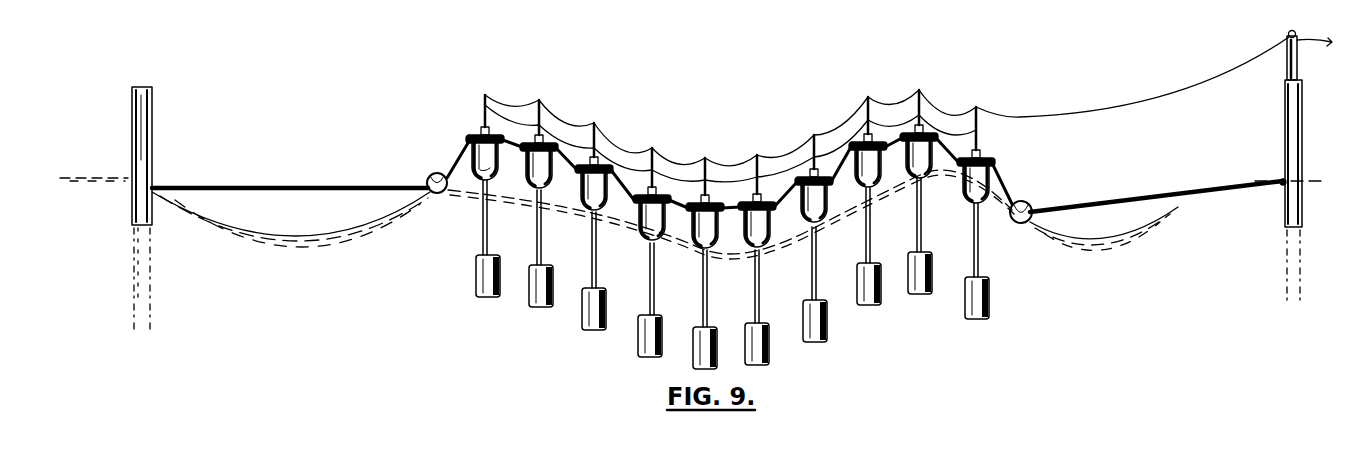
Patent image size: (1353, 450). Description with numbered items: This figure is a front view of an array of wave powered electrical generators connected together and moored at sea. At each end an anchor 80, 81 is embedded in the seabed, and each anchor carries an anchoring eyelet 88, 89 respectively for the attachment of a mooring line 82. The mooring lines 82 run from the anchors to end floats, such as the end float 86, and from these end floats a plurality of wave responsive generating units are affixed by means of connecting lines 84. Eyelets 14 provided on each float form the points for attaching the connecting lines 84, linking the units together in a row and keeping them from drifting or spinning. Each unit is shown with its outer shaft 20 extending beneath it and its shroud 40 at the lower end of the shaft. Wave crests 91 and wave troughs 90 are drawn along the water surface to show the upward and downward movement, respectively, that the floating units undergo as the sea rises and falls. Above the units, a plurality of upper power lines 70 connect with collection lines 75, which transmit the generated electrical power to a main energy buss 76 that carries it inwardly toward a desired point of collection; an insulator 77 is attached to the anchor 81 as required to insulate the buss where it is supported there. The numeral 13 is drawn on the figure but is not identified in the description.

The float housing 13 is at (490, 165).
The anchoring eyelet 14 is at (467, 140).
The outer shaft 20 is at (812, 290).
The shroud 40 is at (592, 315).
The upper power line 70 is at (485, 97).
The collection line 75 is at (955, 118).
The main energy buss 76 is at (1140, 100).
The insulator 77 is at (1288, 32).
The anchor 80 is at (152, 118).
The anchor 81 is at (1290, 135).
The mooring line 82 is at (1155, 206).
The connecting line 84 is at (652, 232).
The end float 86 is at (1022, 204).
The anchoring eyelet 88 is at (152, 186).
The anchoring eyelet 89 is at (1283, 188).
The wave trough 90 is at (330, 242).
The wave crest 91 is at (102, 176).